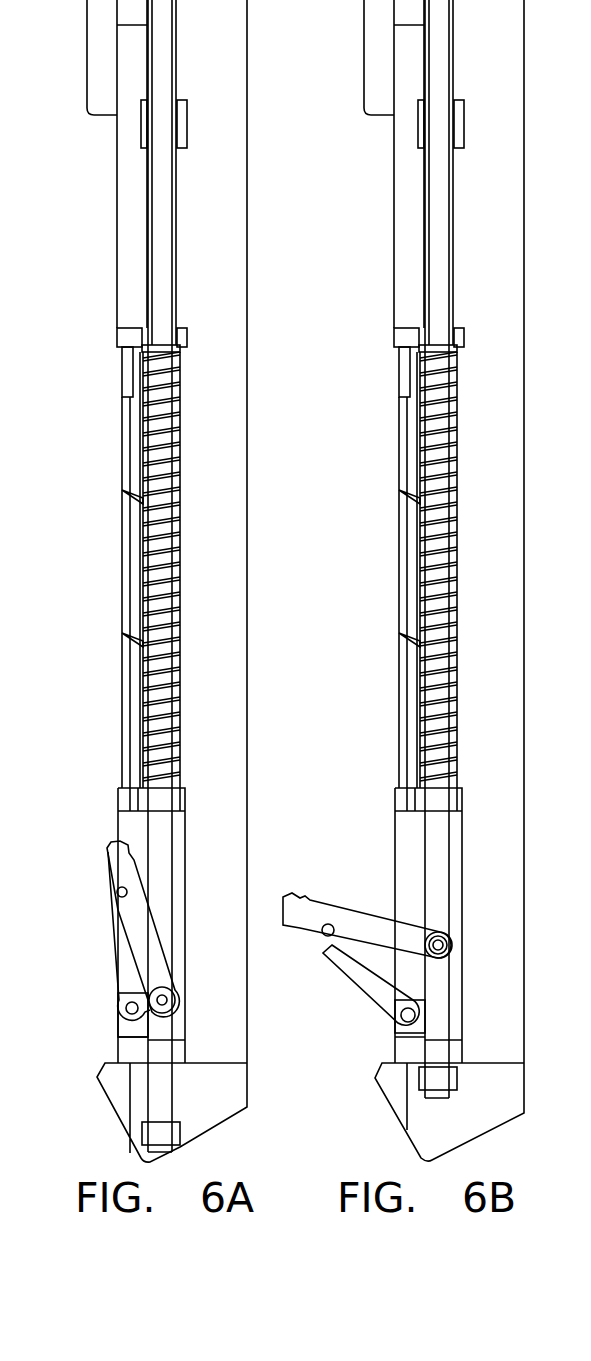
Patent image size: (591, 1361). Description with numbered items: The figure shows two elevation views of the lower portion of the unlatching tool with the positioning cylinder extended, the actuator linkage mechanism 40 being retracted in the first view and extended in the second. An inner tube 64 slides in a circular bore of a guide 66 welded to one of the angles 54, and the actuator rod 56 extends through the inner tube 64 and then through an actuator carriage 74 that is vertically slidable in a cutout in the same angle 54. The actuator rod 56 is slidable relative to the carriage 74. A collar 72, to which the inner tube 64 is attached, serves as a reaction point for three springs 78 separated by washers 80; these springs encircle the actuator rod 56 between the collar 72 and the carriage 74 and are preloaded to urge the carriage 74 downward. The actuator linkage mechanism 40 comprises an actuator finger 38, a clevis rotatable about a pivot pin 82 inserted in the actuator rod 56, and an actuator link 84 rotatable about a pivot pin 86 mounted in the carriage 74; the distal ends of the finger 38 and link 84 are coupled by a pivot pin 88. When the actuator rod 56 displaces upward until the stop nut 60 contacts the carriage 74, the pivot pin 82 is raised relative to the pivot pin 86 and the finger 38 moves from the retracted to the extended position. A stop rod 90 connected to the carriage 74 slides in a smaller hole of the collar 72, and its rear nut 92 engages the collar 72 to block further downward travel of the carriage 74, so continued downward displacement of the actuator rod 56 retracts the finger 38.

In FIG. 6A, the actuator finger 38 is at (105, 857).
In FIG. 6B, the actuator finger 38 is at (367, 912).
In FIG. 6A, the actuator linkage mechanism 40 is at (101, 904).
In FIG. 6B, the actuator linkage mechanism 40 is at (332, 1009).
In FIG. 6A, the angle 54 is at (247, 8).
In FIG. 6B, the angle 54 is at (483, 580).
In FIG. 6A, the actuator rod 56 is at (163, 225).
In FIG. 6B, the actuator rod 56 is at (472, 549).
In FIG. 6A, the stop nut 60 is at (142, 1130).
In FIG. 6B, the stop nut 60 is at (468, 1082).
In FIG. 6A, the inner tube 64 is at (176, 263).
In FIG. 6B, the inner tube 64 is at (486, 252).
In FIG. 6A, the guide 66 is at (187, 118).
In FIG. 6B, the guide 66 is at (469, 122).
In FIG. 6A, the collar 72 is at (187, 340).
In FIG. 6B, the collar 72 is at (457, 330).
In FIG. 6A, the actuator carriage 74 is at (130, 822).
In FIG. 6B, the actuator carriage 74 is at (454, 925).
In FIG. 6A, the springs 78 is at (172, 410).
In FIG. 6B, the springs 78 is at (470, 570).
In FIG. 6A, the washers 80 is at (135, 350).
In FIG. 6B, the washers 80 is at (370, 577).
In FIG. 6A, the pivot pin 82 is at (165, 996).
In FIG. 6B, the pivot pin 82 is at (469, 938).
In FIG. 6A, the actuator link 84 is at (120, 955).
In FIG. 6B, the actuator link 84 is at (370, 986).
In FIG. 6A, the pivot pin 86 is at (128, 1012).
In FIG. 6B, the pivot pin 86 is at (367, 1048).
In FIG. 6A, the pivot pin 88 is at (127, 888).
In FIG. 6B, the pivot pin 88 is at (329, 891).
In FIG. 6A, the stop rod 90 is at (130, 420).
In FIG. 6B, the stop rod 90 is at (380, 570).
In FIG. 6A, the rear nut 92 is at (125, 205).
In FIG. 6B, the rear nut 92 is at (383, 164).